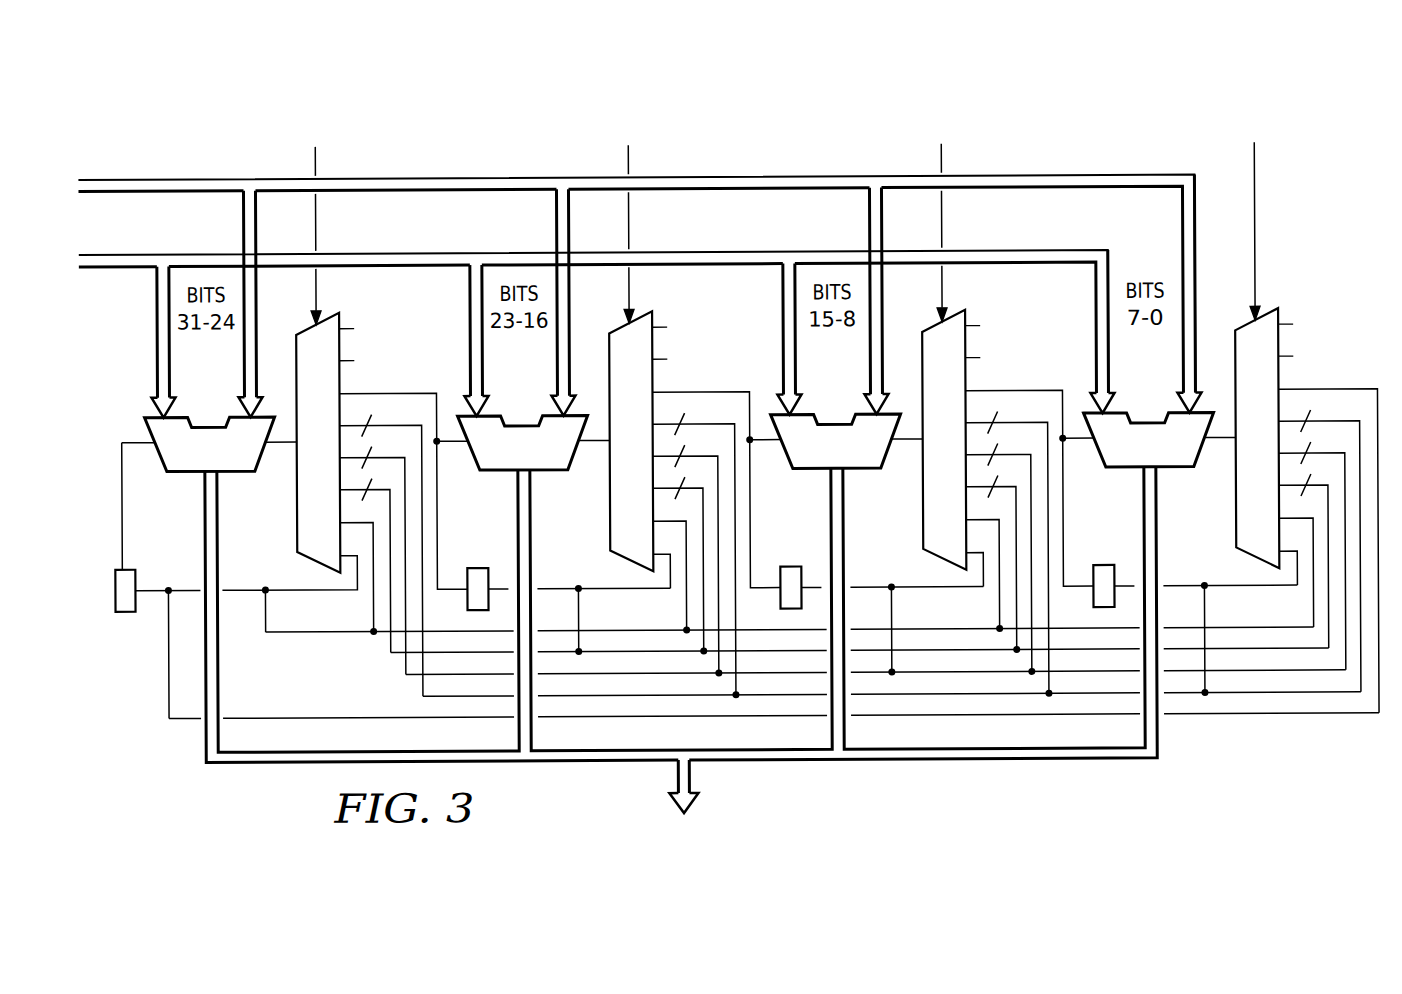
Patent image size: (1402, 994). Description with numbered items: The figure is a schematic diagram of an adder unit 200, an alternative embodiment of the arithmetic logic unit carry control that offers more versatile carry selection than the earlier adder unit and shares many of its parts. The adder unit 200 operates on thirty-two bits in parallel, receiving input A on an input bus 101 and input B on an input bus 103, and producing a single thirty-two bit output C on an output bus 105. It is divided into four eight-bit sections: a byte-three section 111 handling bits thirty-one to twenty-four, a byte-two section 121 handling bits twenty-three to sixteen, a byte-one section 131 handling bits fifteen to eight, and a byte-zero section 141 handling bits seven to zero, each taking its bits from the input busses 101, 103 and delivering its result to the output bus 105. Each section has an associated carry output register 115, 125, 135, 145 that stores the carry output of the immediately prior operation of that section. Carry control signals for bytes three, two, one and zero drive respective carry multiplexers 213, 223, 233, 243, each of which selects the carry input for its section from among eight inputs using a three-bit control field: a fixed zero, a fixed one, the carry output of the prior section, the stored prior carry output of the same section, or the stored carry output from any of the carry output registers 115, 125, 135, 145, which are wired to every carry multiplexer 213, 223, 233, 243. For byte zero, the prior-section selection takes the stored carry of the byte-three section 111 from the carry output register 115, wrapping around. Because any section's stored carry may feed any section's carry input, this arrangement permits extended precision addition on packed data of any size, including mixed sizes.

The input bus 101 is at (425, 191).
The input bus 103 is at (137, 266).
The output bus 105 is at (675, 778).
The byte 3 section 111 is at (218, 424).
The byte 2 section 121 is at (531, 424).
The byte 1 section 131 is at (844, 424).
The byte 0 section 141 is at (1157, 424).
The carry output register 115 is at (125, 609).
The carry output register 125 is at (478, 567).
The carry output register 135 is at (791, 567).
The carry output register 145 is at (1104, 567).
The adder unit 200 is at (438, 133).
The carry multiplexer 213 is at (297, 492).
The carry multiplexer 223 is at (610, 492).
The carry multiplexer 233 is at (923, 492).
The carry multiplexer 243 is at (1236, 492).